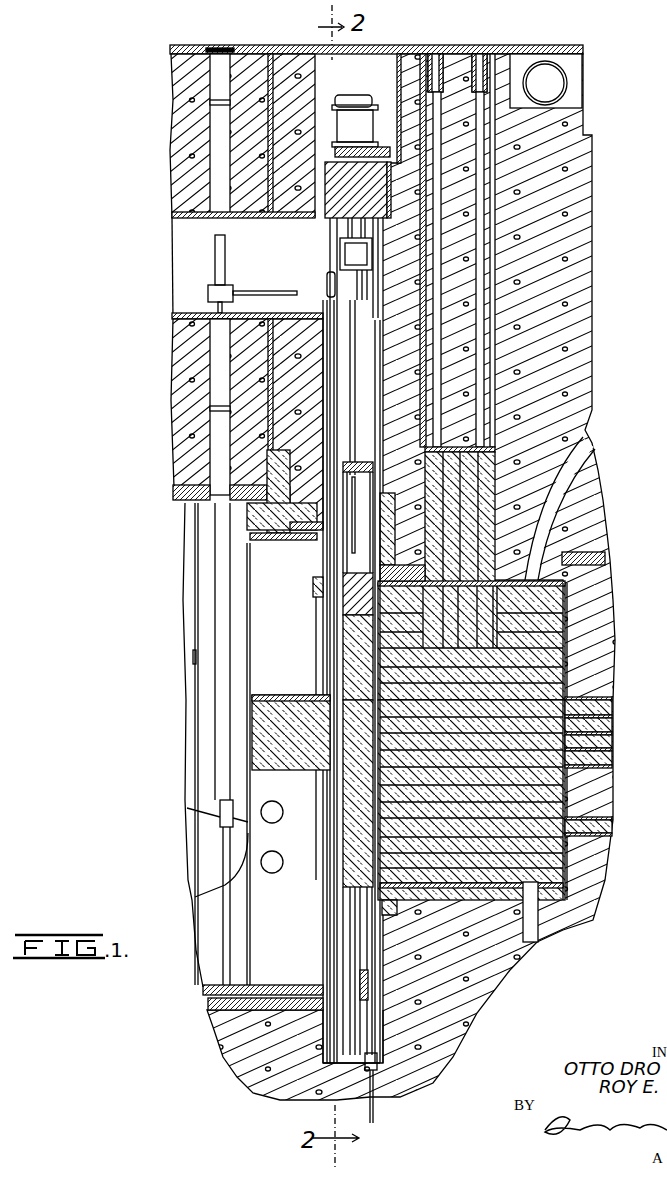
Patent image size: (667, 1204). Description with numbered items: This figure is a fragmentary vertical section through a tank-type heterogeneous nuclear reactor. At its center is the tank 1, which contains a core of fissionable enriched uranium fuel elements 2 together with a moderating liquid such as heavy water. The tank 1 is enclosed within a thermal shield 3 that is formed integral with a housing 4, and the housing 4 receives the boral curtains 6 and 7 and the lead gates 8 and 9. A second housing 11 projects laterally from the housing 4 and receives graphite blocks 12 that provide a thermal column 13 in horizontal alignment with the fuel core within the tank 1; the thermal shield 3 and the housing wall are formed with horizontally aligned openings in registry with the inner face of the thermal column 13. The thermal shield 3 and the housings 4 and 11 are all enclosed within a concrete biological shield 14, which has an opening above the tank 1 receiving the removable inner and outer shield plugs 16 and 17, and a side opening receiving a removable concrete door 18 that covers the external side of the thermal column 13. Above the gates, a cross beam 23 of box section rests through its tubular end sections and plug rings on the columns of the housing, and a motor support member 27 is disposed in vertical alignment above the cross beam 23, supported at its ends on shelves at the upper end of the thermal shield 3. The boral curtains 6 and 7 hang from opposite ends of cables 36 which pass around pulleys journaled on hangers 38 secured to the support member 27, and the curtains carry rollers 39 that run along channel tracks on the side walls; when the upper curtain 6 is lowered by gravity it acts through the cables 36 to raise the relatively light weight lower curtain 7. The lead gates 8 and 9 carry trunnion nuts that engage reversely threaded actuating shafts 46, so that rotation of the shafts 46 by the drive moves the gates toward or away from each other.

The tank 1 is at (248, 590).
The fuel elements 2 is at (233, 738).
The thermal shield 3 is at (322, 958).
The housing 4 is at (400, 1040).
The boral curtain 6 is at (330, 633).
The boral curtain 7 is at (332, 828).
The lead gate 8 is at (355, 665).
The lead gate 9 is at (355, 790).
The housing 11 is at (497, 905).
The graphite blocks 12 is at (550, 640).
The thermal column 13 is at (550, 660).
The concrete biological shield 14 is at (578, 258).
The inner shield plug 16 is at (175, 403).
The outer shield plug 17 is at (175, 133).
The concrete door 18 is at (605, 800).
The cross beam 23 is at (340, 250).
The motor support member 27 is at (330, 213).
The cables 36 is at (325, 310).
The hangers 38 is at (325, 257).
The rollers 39 is at (328, 295).
The actuating shafts 46 is at (362, 923).